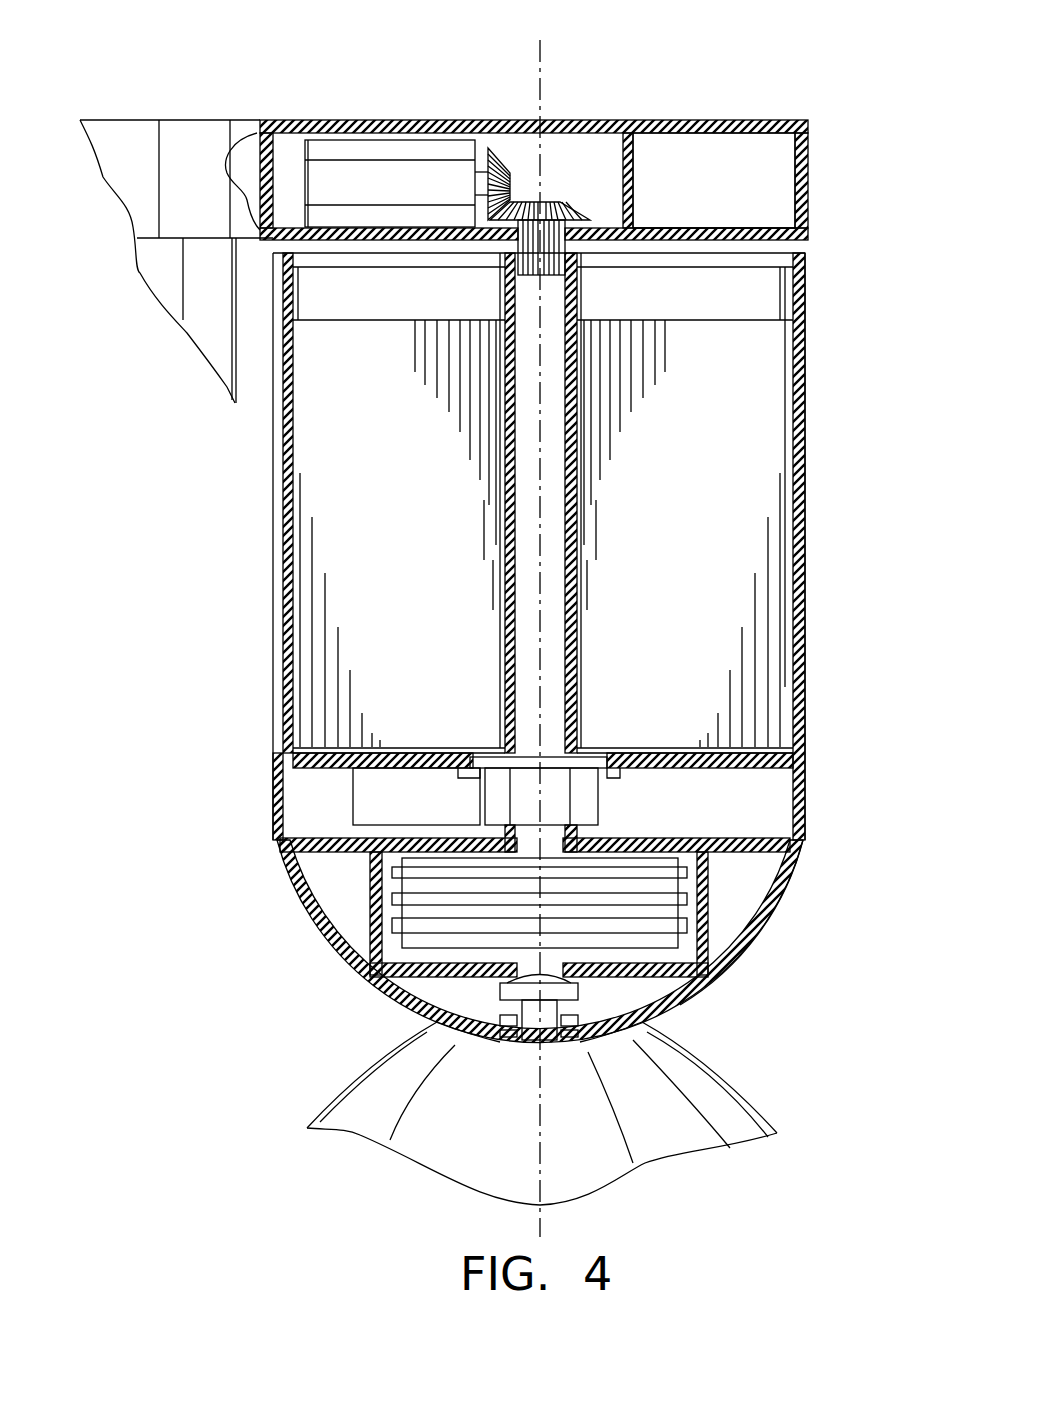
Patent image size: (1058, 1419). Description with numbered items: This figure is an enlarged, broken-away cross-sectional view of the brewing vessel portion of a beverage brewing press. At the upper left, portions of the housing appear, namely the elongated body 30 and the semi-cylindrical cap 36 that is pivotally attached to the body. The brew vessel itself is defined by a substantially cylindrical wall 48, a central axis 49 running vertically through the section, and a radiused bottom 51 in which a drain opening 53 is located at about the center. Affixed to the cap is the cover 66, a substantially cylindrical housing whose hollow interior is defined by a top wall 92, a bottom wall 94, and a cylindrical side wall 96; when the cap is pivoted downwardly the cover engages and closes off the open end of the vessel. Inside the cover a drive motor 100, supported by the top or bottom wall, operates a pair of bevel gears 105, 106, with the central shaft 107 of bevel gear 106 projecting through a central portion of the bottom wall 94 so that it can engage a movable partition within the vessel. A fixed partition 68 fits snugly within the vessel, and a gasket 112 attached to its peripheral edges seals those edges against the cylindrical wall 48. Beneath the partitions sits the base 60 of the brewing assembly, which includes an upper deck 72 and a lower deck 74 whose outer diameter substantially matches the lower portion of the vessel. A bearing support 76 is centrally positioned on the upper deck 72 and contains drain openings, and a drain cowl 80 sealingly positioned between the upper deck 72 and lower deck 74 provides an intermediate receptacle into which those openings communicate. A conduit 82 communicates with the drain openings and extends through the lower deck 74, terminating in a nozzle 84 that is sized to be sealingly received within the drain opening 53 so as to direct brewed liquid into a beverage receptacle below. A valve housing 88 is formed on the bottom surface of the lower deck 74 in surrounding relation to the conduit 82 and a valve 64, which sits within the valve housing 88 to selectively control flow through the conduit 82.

The elongated body 30 is at (197, 322).
The semi-cylindrical cap 36 is at (156, 125).
The cylindrical wall 48 is at (800, 458).
The central axis 49 is at (538, 68).
The radiused bottom 51 is at (758, 920).
The drain opening 53 is at (513, 1047).
The base 60 is at (521, 728).
The valve 64 is at (707, 903).
The cover 66 is at (770, 112).
The fixed partition 68 is at (320, 310).
The upper deck 72 is at (313, 765).
The lower deck 74 is at (313, 853).
The bearing support 76 is at (600, 770).
The drain cowl 80 is at (513, 807).
The conduit 82 is at (575, 835).
The nozzle 84 is at (605, 993).
The valve housing 88 is at (373, 917).
The top wall 92 is at (733, 135).
The bottom wall 94 is at (723, 230).
The cylindrical side wall 96 is at (808, 170).
The drive motor 100 is at (362, 160).
The bevel gear 105 is at (518, 150).
The bevel gear 106 is at (562, 190).
The central shaft 107 is at (547, 275).
The gasket 112 is at (283, 498).